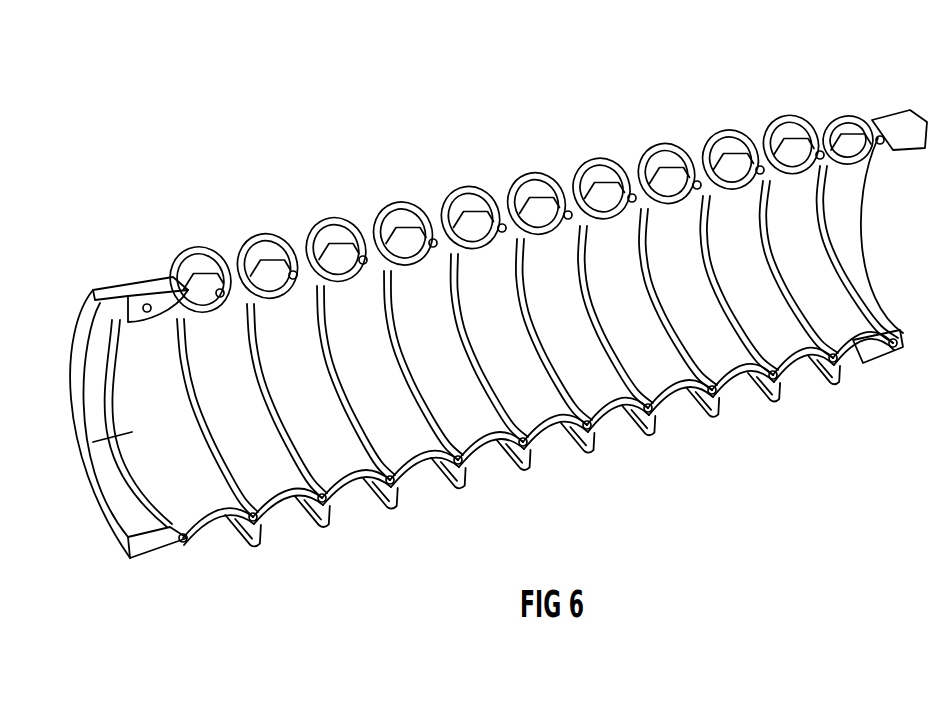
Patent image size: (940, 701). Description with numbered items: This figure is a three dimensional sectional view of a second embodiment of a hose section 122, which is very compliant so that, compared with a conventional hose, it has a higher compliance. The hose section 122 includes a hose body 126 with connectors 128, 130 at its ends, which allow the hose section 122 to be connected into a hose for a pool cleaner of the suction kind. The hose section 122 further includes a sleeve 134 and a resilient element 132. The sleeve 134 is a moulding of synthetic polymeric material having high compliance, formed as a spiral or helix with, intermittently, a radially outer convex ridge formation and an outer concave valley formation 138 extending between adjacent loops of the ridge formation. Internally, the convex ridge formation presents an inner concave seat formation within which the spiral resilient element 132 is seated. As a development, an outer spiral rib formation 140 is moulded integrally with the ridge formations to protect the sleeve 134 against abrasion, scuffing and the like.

The hose section 122 is at (512, 116).
The hose body 126 is at (637, 146).
The connector 128 is at (883, 120).
The connector 130 is at (142, 288).
The resilient element 132 is at (390, 302).
The sleeve 134 is at (527, 210).
The valley formation 138 is at (301, 228).
The outer spiral rib formation 140 is at (793, 120).